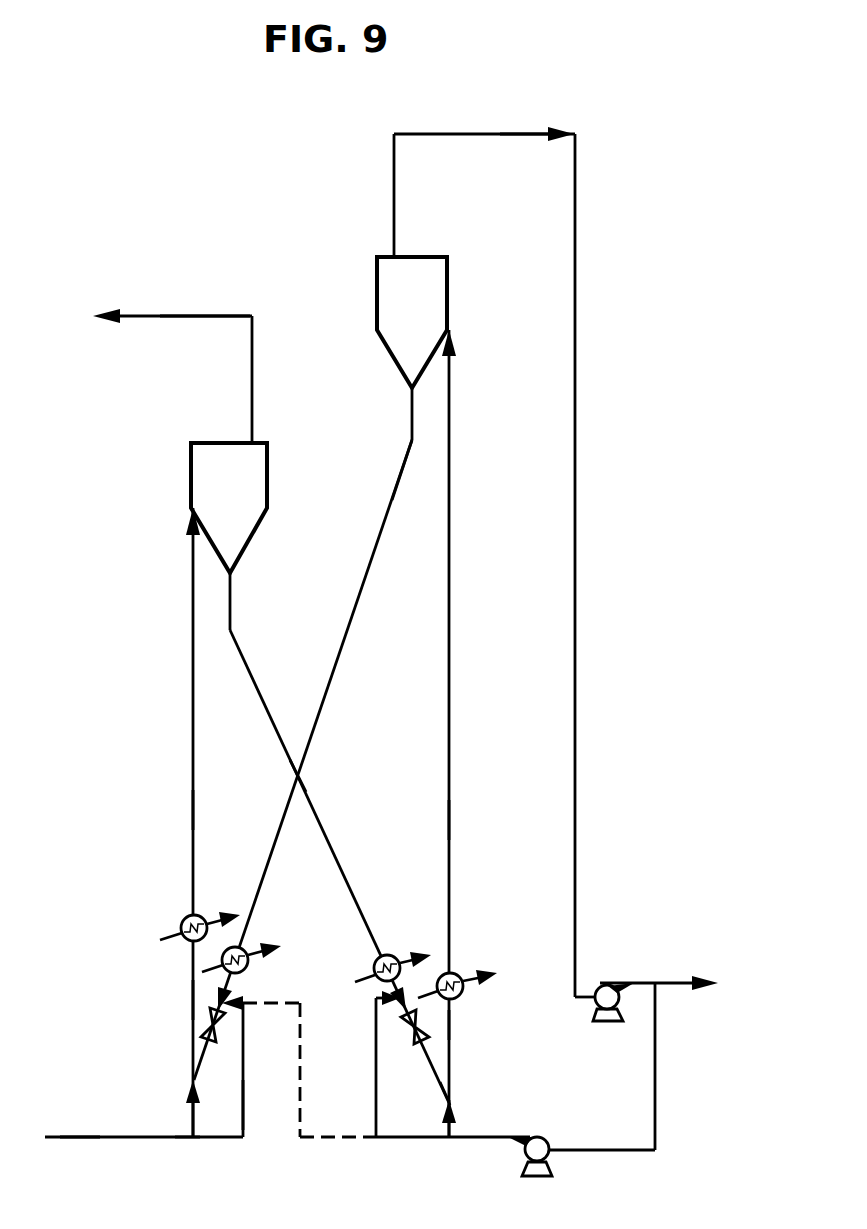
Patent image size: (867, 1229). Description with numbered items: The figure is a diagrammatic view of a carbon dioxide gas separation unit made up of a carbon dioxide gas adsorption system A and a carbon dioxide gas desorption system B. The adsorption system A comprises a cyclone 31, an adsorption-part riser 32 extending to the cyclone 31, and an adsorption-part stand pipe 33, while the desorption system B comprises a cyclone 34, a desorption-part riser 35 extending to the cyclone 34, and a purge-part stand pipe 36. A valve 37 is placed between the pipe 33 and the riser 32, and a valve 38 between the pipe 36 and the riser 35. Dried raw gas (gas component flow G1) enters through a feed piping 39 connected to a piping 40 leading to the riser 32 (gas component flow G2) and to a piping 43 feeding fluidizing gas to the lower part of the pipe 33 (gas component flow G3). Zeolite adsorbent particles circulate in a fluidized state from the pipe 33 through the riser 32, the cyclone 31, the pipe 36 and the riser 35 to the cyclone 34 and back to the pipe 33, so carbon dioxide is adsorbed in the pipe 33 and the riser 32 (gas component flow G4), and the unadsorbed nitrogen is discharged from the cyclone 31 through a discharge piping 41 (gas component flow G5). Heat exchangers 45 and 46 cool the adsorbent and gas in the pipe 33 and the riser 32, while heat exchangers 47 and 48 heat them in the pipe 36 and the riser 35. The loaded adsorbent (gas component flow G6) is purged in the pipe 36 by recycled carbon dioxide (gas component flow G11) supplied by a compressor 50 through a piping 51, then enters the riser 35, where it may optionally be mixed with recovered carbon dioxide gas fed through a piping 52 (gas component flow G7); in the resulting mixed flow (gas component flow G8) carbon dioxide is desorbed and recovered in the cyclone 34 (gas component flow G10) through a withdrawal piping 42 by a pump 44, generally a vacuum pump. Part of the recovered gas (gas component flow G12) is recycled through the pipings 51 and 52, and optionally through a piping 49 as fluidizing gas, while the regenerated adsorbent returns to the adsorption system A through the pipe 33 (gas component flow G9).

The cyclone 31 is at (191, 468).
The adsorption-part riser 32 is at (193, 745).
The adsorption-part stand pipe 33 is at (342, 650).
The cyclone 34 is at (377, 277).
The desorption-part riser 35 is at (449, 657).
The purge-part stand pipe 36 is at (249, 668).
The valve 37 is at (198, 1032).
The valve 38 is at (430, 1040).
The feed piping 39 is at (85, 1137).
The piping 40 is at (188, 1137).
The discharge piping 41 is at (163, 316).
The withdrawal piping 42 is at (575, 200).
The piping 43 is at (232, 1137).
The pump 44 is at (607, 985).
The heat exchanger 45 is at (247, 951).
The heat exchanger 46 is at (185, 918).
The heat exchanger 47 is at (393, 955).
The heat exchanger 48 is at (462, 975).
The piping 49 is at (330, 1140).
The compressor 50 is at (547, 1140).
The piping 51 is at (380, 1124).
The piping 52 is at (453, 1125).
The gas component flow G1 is at (75, 1137).
The gas component flow G2 is at (193, 1110).
The gas component flow G3 is at (243, 1105).
The gas component flow G4 is at (193, 1003).
The gas component flow G5 is at (213, 316).
The gas component flow G6 is at (310, 800).
The gas component flow G7 is at (449, 1070).
The gas component flow G8 is at (451, 1025).
The gas component flow G9 is at (400, 472).
The gas component flow G10 is at (394, 183).
The gas component flow G11 is at (376, 1060).
The gas component flow G12 is at (672, 983).
The carbon dioxide gas adsorption system A is at (284, 815).
The carbon dioxide gas desorption system B is at (327, 838).